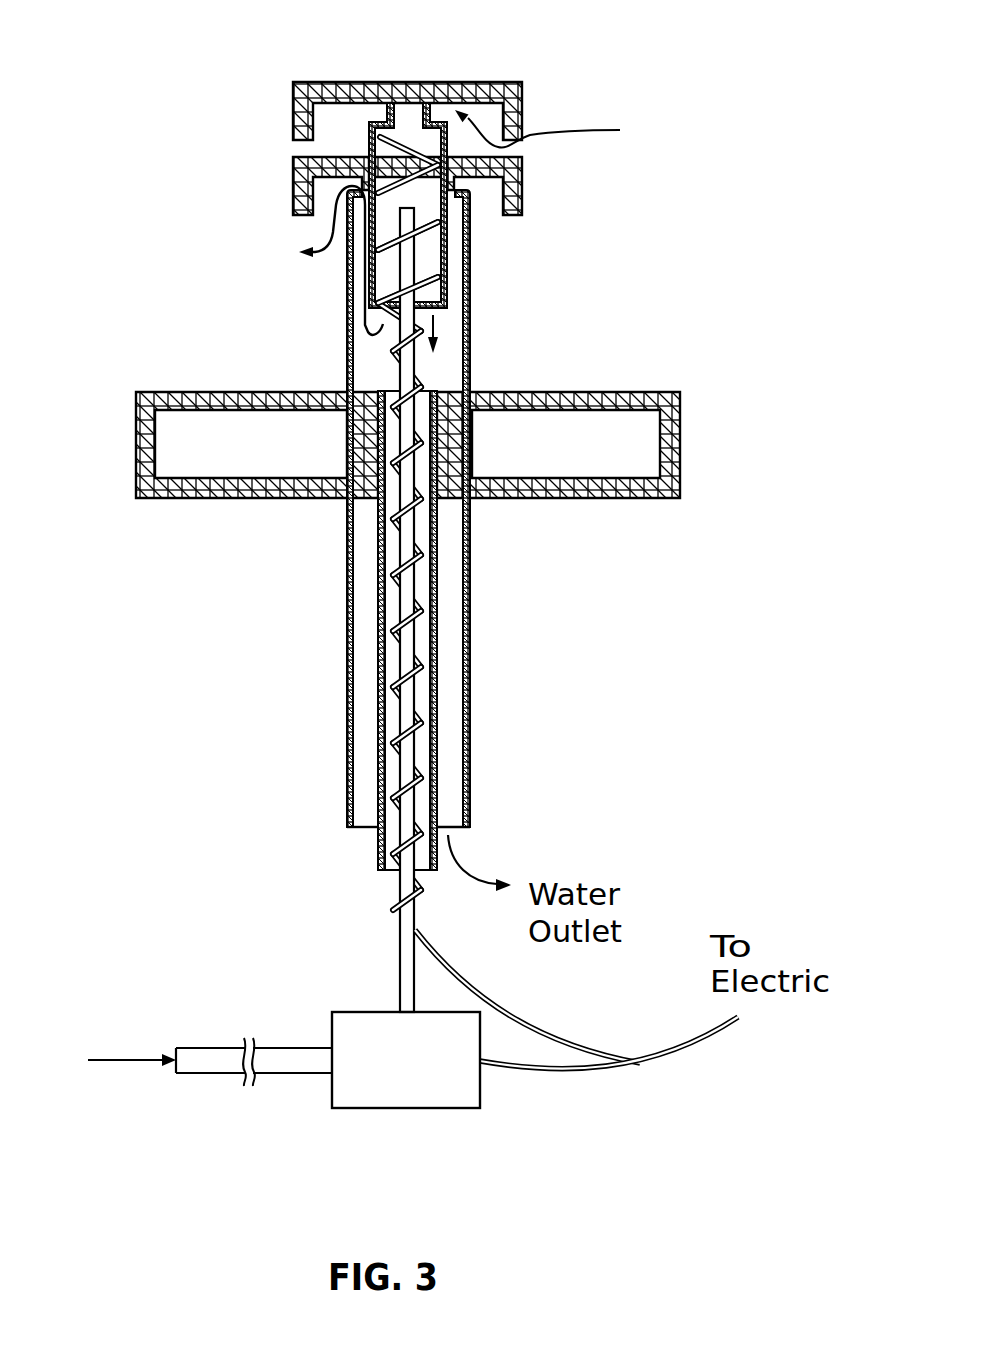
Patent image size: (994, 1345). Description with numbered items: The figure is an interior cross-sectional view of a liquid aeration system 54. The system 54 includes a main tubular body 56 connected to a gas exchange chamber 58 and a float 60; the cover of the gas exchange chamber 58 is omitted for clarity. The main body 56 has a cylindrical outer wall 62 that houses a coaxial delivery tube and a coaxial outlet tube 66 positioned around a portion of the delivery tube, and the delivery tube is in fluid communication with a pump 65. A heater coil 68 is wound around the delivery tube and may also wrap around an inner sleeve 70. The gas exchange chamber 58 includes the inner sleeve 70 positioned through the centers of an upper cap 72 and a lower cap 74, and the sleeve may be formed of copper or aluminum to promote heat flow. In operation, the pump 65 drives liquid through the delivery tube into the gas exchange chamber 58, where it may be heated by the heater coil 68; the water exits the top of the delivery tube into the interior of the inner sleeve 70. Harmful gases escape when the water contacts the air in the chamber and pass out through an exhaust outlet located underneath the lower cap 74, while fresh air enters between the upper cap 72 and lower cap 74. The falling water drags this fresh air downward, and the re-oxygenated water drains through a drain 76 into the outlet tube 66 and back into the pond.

The liquid aeration system 54 is at (464, 107).
The gas exchange chamber 58 is at (322, 70).
The upper cap 72 is at (523, 117).
The lower cap 74 is at (523, 192).
The inner sleeve 70 is at (448, 270).
The heater coil 68 is at (418, 370).
The drain 76 is at (347, 334).
The float 60 is at (681, 440).
The main tubular body 56 is at (410, 508).
The cylindrical outer wall 62 is at (345, 726).
The outlet tube 66 is at (438, 746).
The pump 65 is at (383, 1095).